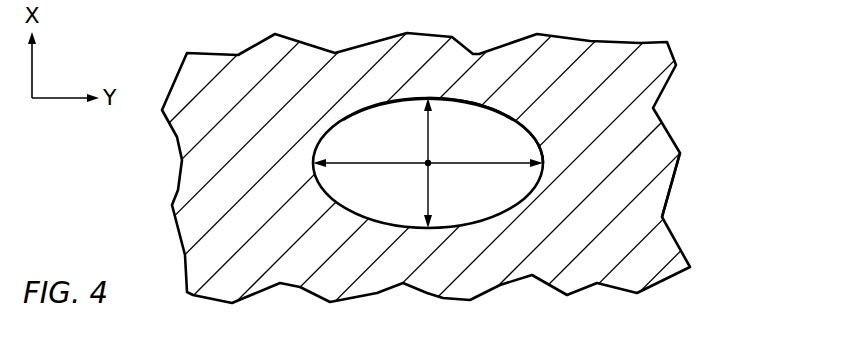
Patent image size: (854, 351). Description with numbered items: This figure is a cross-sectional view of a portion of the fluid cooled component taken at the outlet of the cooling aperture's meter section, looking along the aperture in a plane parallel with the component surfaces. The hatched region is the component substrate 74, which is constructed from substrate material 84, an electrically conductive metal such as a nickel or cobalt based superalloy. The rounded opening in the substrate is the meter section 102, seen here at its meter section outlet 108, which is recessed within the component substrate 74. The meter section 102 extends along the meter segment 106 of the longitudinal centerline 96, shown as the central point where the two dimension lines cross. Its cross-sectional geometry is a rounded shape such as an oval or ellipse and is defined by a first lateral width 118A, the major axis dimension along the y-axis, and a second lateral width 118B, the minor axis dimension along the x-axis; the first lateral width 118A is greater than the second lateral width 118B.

The component substrate 74 is at (684, 119).
The substrate material 84 is at (666, 190).
The longitudinal centerline 96 is at (428, 187).
The meter segment 106 is at (368, 220).
The meter section 102 is at (460, 108).
The meter section outlet 108 is at (485, 115).
The first lateral width 118A is at (538, 163).
The second lateral width 118B is at (431, 200).